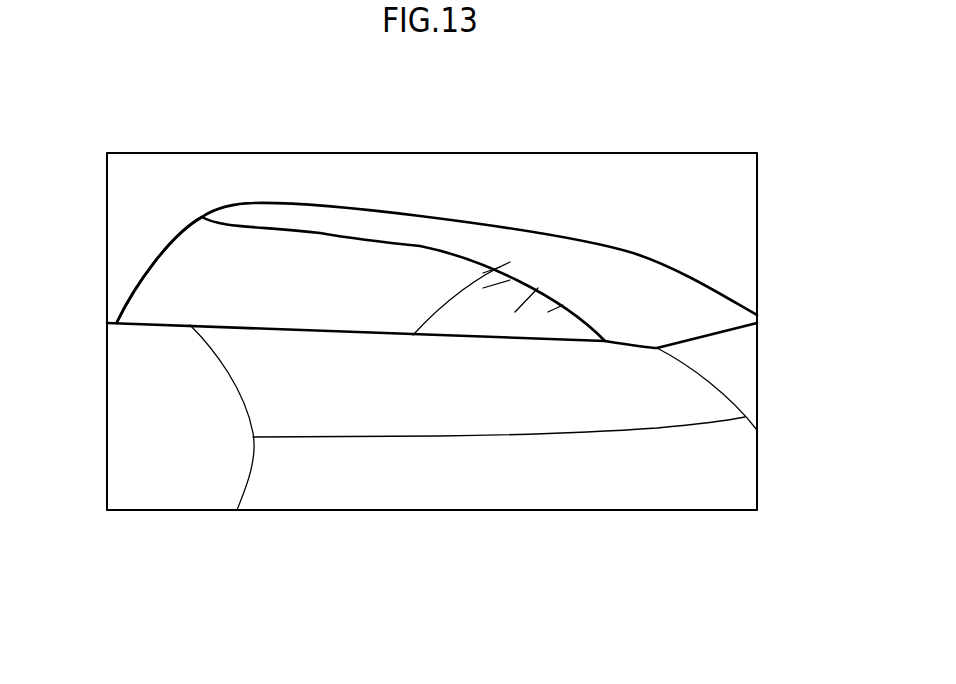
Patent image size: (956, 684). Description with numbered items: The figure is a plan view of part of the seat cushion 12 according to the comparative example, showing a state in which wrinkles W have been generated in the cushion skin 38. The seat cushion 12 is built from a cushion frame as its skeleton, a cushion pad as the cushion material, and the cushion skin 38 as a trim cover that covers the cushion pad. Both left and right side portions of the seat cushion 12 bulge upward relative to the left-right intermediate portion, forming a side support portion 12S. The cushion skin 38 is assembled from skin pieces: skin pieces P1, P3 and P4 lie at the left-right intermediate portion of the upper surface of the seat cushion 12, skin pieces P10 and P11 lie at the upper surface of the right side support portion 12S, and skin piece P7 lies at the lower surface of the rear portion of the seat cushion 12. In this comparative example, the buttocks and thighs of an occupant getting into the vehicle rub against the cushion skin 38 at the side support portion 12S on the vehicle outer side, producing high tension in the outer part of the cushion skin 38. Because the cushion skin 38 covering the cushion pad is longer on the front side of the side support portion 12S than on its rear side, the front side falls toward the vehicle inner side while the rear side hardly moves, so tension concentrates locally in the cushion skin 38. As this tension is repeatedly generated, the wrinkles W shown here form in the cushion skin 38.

The seat cushion 12 is at (162, 207).
The side support portion 12S is at (272, 252).
The wrinkles W is at (470, 293).
The cushion skin 38 is at (636, 253).
The skin piece P1 is at (395, 483).
The skin piece P3 is at (522, 417).
The skin piece P4 is at (180, 483).
The skin piece P7 is at (740, 370).
The skin piece P10 is at (172, 272).
The skin piece P11 is at (545, 250).